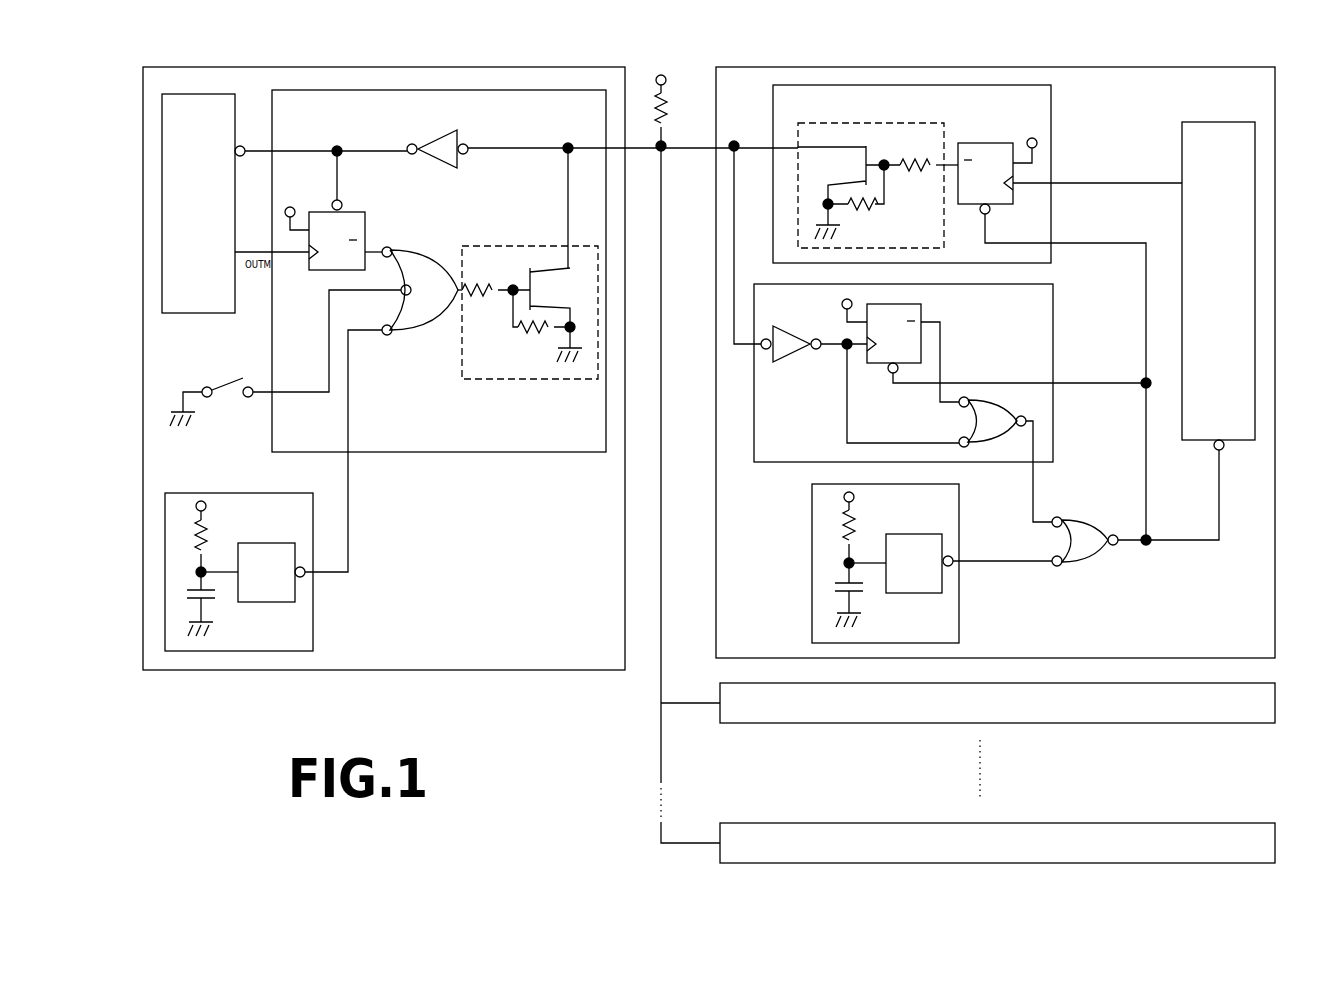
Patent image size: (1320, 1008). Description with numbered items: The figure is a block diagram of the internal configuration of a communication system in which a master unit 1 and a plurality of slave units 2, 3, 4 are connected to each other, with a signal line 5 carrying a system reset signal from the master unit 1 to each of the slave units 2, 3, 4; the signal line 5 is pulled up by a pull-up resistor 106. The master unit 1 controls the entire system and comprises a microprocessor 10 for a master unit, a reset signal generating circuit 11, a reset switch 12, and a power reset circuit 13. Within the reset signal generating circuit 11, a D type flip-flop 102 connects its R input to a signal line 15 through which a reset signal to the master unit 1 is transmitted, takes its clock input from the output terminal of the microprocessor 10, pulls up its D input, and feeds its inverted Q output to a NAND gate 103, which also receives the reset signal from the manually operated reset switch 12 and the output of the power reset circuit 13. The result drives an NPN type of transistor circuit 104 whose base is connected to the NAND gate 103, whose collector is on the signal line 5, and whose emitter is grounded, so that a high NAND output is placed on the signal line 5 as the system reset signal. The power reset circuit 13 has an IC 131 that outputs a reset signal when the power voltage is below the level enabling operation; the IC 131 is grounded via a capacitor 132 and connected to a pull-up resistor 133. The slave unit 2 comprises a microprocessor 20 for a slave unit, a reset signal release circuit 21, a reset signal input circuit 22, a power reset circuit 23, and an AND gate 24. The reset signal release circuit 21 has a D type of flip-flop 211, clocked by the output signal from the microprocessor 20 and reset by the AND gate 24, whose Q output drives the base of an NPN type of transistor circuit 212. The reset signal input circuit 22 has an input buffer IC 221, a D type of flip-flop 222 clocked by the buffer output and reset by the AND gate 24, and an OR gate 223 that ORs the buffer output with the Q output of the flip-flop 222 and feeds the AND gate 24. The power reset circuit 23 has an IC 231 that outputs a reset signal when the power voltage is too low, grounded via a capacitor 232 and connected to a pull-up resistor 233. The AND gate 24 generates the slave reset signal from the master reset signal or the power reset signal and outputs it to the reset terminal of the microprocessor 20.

The master unit 1 is at (456, 67).
The slave unit 2 is at (847, 67).
The slave unit 3 is at (856, 726).
The slave unit 4 is at (834, 823).
The signal line 5 is at (681, 146).
The microprocessor for a master unit 10 is at (224, 313).
The reset signal generating circuit 11 is at (535, 452).
The reset switch 12 is at (230, 400).
The power reset circuit 13 is at (313, 627).
The signal line 15 is at (311, 149).
The microprocessor for a slave unit 20 is at (1219, 122).
The reset signal release circuit 21 is at (1051, 100).
The reset signal input circuit 22 is at (1053, 302).
The power reset circuit 23 is at (959, 500).
The AND gate 24 is at (1084, 554).
The D type flip-flop 102 is at (353, 218).
The NAND gate 103 is at (408, 252).
The NPN type of transistor circuit 104 is at (496, 248).
The pull-up resistor 106 is at (680, 89).
The IC 131 is at (258, 543).
The capacitor 132 is at (222, 597).
The pull-up resistor 133 is at (216, 512).
The D type of flip-flop 211 is at (995, 143).
The NPN type of transistor circuit 212 is at (868, 125).
The input buffer IC 221 is at (776, 334).
The D type of flip-flop 222 is at (921, 307).
The OR gate 223 is at (996, 411).
The IC 231 is at (902, 533).
The capacitor 232 is at (824, 589).
The pull-up resistor 233 is at (834, 525).